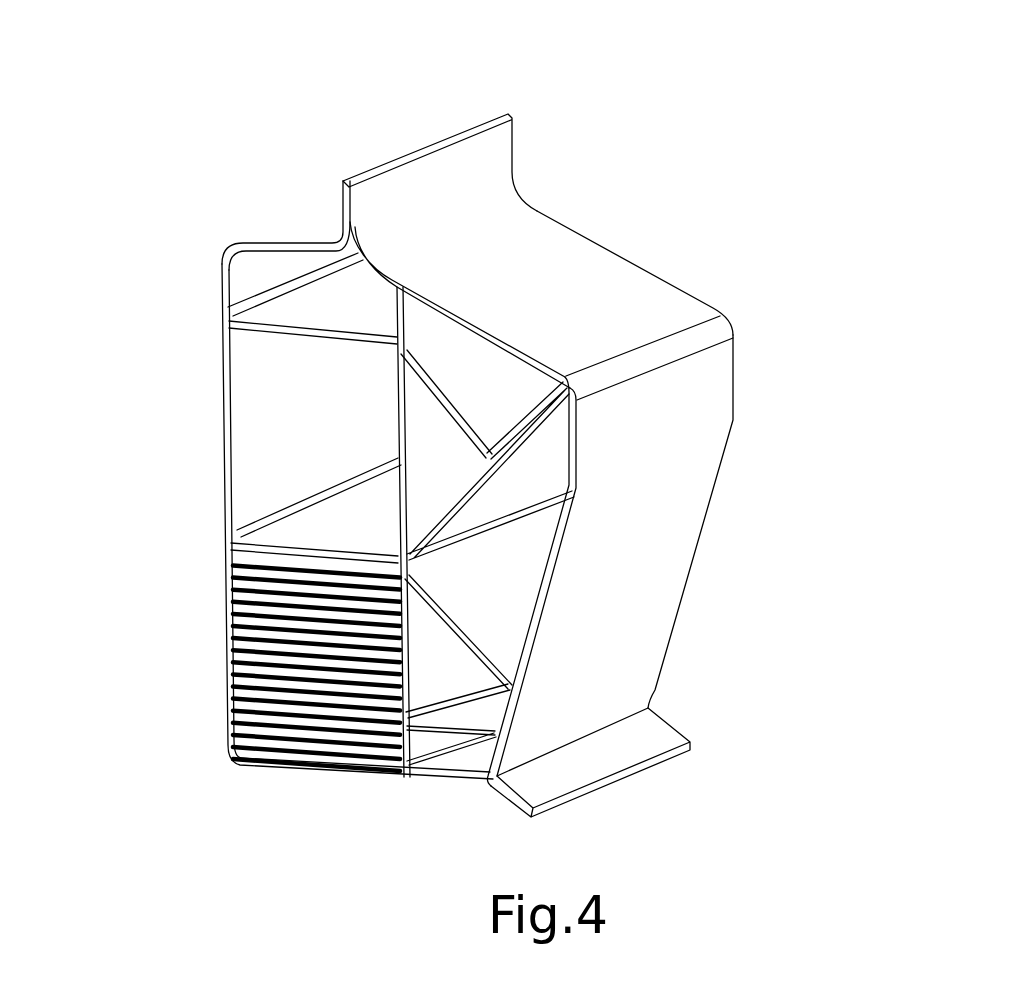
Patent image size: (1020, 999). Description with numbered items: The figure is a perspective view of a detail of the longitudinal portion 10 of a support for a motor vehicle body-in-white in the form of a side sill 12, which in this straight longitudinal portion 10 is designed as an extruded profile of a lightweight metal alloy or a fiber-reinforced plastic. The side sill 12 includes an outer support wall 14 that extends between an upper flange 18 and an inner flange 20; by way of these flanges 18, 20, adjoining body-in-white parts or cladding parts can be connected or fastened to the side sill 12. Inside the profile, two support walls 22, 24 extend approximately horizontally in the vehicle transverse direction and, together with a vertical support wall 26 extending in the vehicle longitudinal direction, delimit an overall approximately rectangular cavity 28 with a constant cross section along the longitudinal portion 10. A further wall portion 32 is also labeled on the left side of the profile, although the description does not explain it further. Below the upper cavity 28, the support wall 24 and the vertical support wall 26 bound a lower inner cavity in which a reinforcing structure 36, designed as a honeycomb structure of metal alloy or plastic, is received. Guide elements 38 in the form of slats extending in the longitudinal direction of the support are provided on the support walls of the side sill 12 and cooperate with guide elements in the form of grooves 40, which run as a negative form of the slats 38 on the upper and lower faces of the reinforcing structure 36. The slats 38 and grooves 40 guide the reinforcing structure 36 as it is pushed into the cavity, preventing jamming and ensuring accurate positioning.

The longitudinal portion 10 is at (612, 292).
The side sill 12 is at (602, 100).
The outer support wall 14 is at (707, 537).
The upper flange 18 is at (490, 140).
The inner flange 20 is at (642, 750).
The support wall 22 is at (303, 313).
The support wall 24 is at (302, 526).
The vertical support wall 26 is at (435, 480).
The cavity 28 is at (265, 410).
The side wall edge 32 is at (237, 460).
The reinforcing structure 36 is at (263, 615).
The guide elements 38 is at (310, 560).
The grooves 40 is at (313, 753).